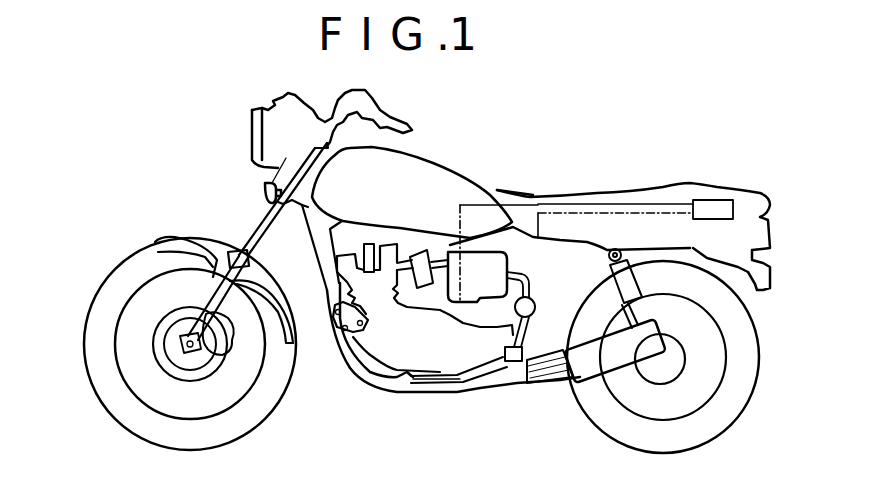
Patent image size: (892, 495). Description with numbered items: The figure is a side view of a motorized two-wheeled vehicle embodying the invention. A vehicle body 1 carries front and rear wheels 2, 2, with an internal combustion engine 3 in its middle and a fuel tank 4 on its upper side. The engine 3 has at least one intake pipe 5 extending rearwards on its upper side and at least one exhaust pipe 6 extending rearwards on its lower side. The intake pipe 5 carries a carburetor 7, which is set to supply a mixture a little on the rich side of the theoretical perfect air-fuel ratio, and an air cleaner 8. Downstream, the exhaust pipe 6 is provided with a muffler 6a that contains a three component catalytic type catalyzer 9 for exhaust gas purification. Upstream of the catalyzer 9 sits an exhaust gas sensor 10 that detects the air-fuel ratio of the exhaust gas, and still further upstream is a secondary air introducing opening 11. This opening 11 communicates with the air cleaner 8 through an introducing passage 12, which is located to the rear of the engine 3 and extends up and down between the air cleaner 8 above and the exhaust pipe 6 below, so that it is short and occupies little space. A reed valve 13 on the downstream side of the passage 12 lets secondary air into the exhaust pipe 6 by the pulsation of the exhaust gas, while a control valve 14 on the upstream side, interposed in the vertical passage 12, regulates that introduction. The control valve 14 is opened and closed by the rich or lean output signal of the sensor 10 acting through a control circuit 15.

The vehicle body 1 is at (243, 111).
The front and rear wheels 2 is at (262, 407).
The internal combustion engine 3 is at (383, 343).
The fuel tank 4 is at (432, 175).
The intake pipe 5 is at (407, 250).
The exhaust pipe 6 is at (345, 365).
The muffler 6a is at (610, 360).
The carburetor 7 is at (428, 250).
The air cleaner 8 is at (504, 262).
The catalyzer 9 is at (548, 376).
The exhaust gas sensor 10 is at (462, 373).
The secondary air introducing opening 11 is at (398, 376).
The introducing passage 12 is at (524, 330).
The reed valve 13 is at (510, 364).
The control valve 14 is at (530, 300).
The control circuit 15 is at (713, 203).